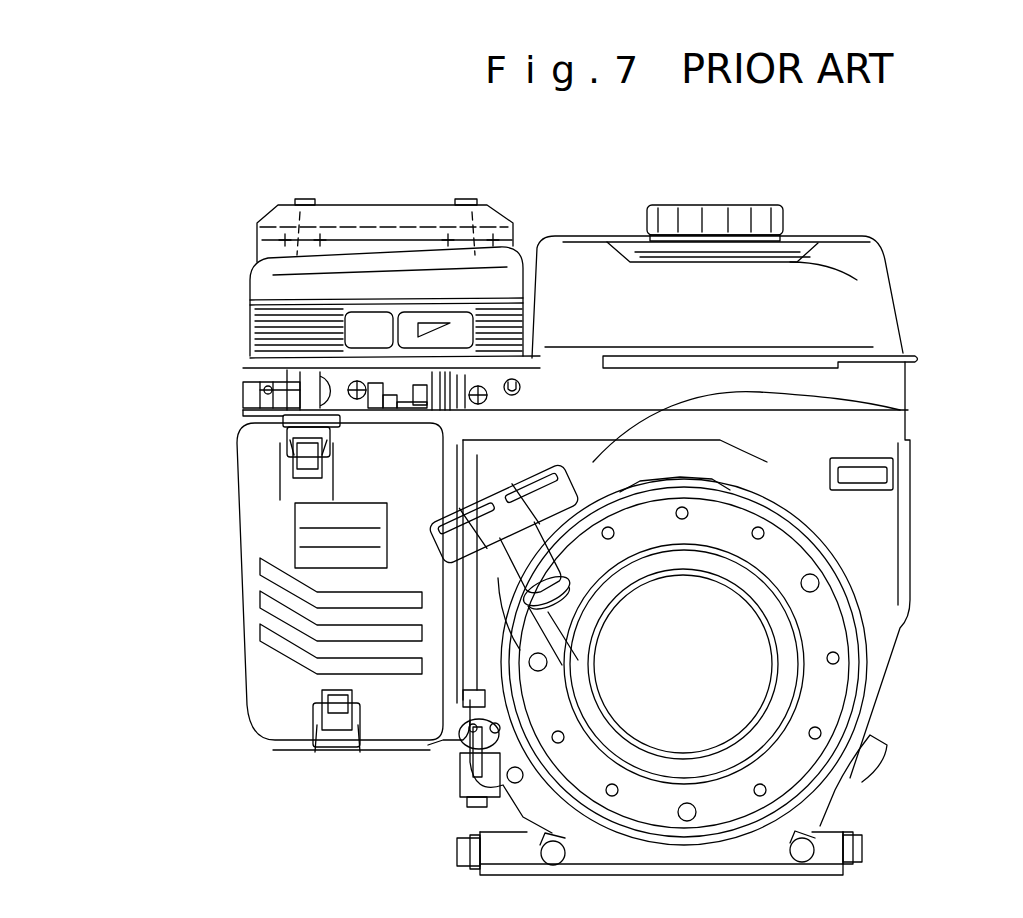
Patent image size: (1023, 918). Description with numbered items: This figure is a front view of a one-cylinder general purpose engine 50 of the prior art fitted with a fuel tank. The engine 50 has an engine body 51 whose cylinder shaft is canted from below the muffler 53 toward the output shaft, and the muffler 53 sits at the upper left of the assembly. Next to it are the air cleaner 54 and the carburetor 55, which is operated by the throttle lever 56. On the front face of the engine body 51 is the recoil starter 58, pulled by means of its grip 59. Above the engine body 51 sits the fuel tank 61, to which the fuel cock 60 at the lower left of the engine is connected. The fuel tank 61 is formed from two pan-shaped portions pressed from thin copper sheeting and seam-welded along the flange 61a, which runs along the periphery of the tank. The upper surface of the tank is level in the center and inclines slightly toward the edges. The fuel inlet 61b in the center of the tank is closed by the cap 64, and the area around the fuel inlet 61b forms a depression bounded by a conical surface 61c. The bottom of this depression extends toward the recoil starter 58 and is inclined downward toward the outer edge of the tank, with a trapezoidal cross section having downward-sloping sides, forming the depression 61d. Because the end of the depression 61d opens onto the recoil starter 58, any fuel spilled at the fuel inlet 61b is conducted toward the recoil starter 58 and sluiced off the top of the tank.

The engine 50 is at (553, 202).
The engine body 51 is at (827, 810).
The muffler 53 is at (357, 205).
The air cleaner 54 is at (273, 742).
The carburetor 55 is at (410, 390).
The throttle lever 56 is at (440, 427).
The recoil starter 58 is at (853, 698).
The grip of the recoil starter 59 is at (897, 410).
The fuel cock 60 is at (460, 750).
The fuel tank 61 is at (897, 313).
The flange 61a is at (913, 352).
The fuel inlet 61b is at (790, 236).
The conical surface 61c is at (815, 252).
The depression 61d is at (803, 260).
The cap for the fuel inlet 64 is at (753, 203).